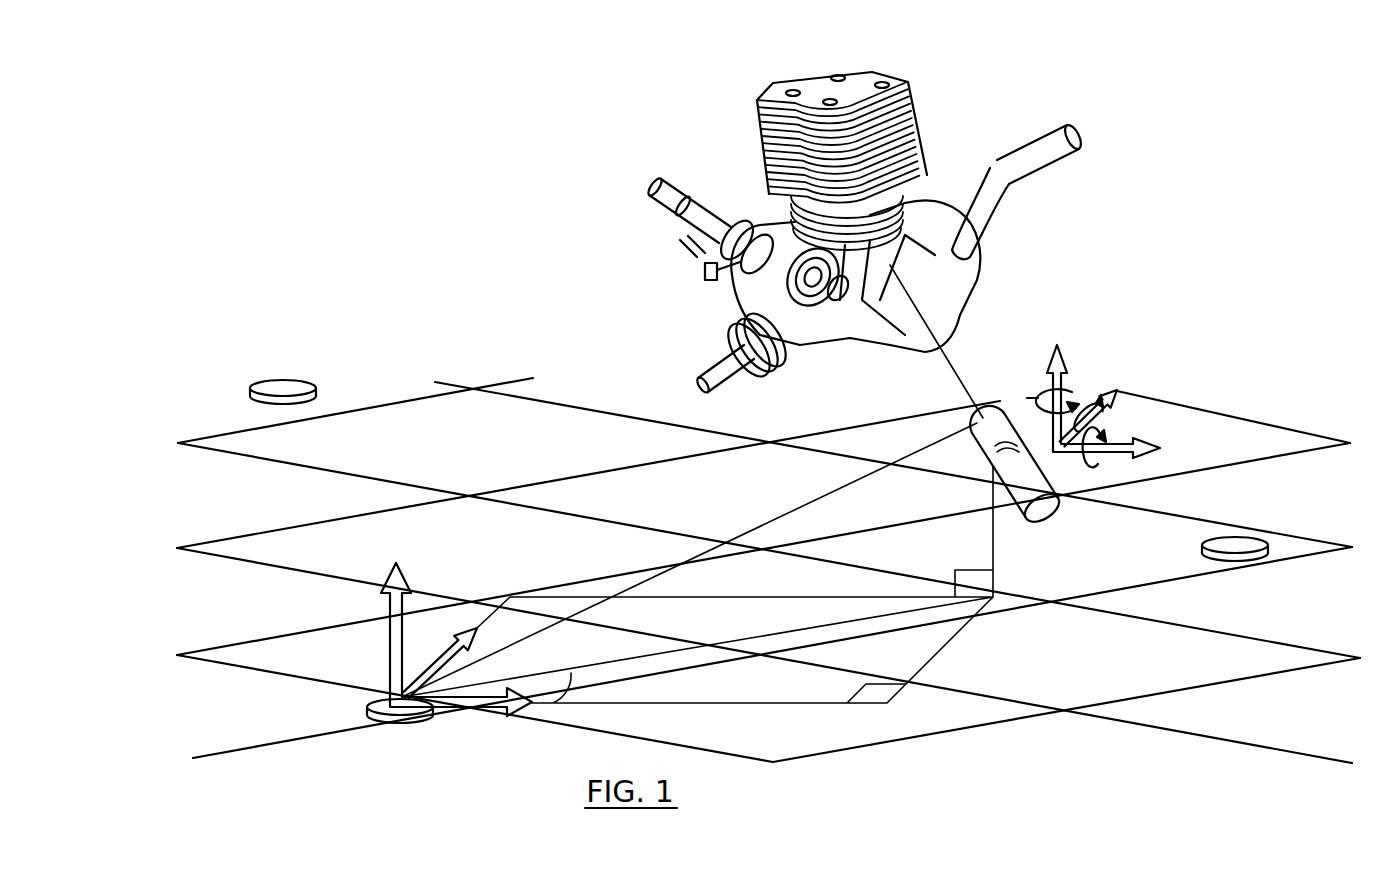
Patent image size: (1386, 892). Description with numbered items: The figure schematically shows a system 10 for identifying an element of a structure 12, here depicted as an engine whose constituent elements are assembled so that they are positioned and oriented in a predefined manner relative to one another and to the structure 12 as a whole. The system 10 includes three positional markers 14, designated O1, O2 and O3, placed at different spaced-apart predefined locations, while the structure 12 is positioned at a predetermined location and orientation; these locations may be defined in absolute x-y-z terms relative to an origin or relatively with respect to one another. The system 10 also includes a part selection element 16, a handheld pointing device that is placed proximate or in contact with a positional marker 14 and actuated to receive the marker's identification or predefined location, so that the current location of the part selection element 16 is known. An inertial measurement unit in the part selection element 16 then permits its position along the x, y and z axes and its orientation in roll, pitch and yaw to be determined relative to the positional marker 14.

The system 10 is at (1080, 756).
The structure 12 is at (913, 117).
The positional marker 14 is at (298, 387).
The part selection element 16 is at (1027, 488).